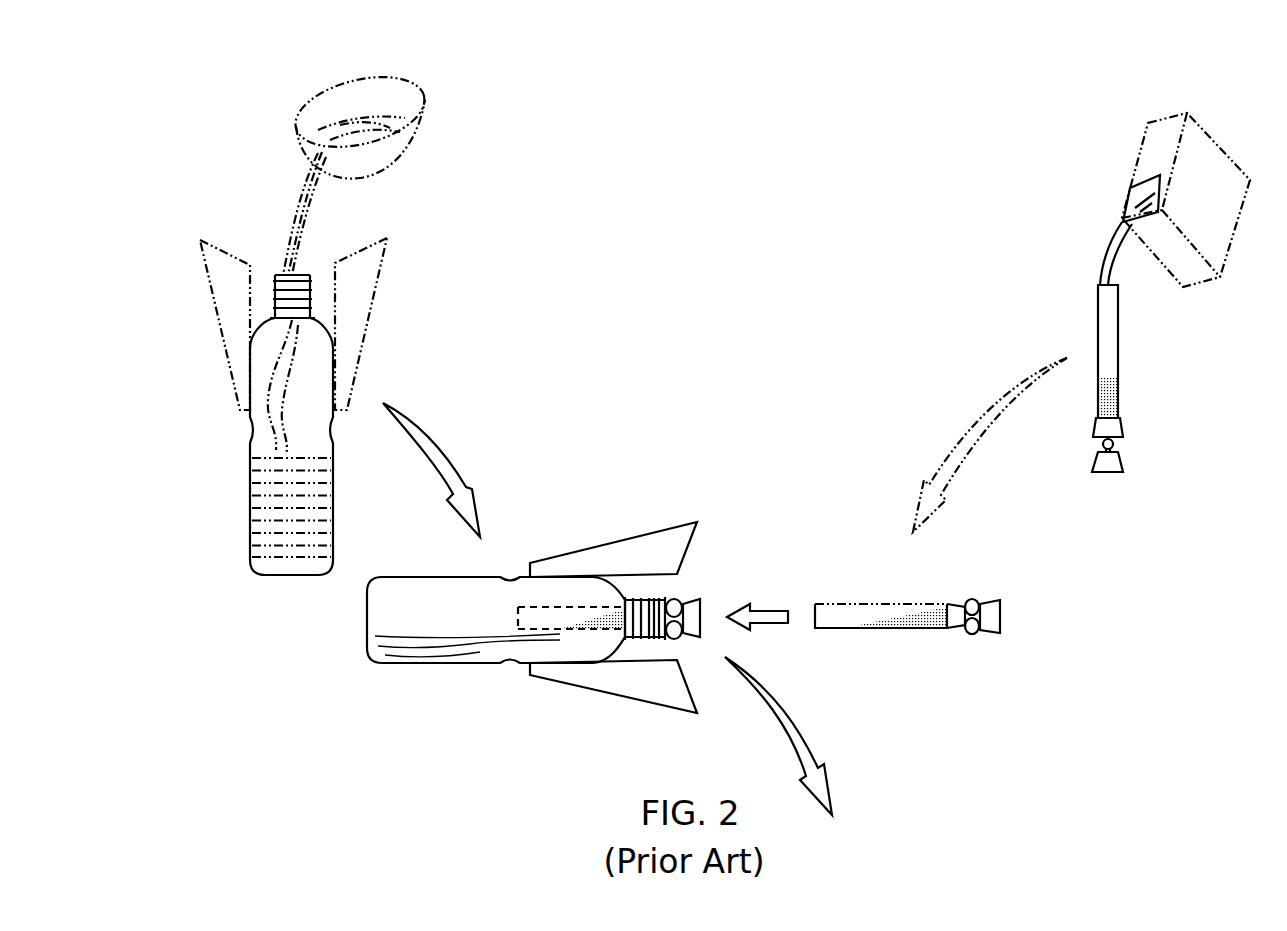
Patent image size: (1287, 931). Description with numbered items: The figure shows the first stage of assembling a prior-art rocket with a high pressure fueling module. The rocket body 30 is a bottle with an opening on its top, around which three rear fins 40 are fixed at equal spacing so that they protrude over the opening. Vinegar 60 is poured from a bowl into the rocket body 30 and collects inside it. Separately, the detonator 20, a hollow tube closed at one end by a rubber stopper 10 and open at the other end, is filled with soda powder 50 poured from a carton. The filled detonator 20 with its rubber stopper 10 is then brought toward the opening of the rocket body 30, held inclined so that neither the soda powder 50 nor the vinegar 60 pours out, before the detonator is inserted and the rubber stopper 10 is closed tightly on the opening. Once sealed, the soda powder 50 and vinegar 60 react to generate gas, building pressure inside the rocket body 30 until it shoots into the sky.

The rubber stopper 10 is at (665, 600).
The detonator 20 is at (540, 630).
The rocket body 30 is at (250, 535).
The rear fins 40 is at (365, 287).
The soda powder 50 is at (597, 630).
The vinegar 60 is at (297, 207).